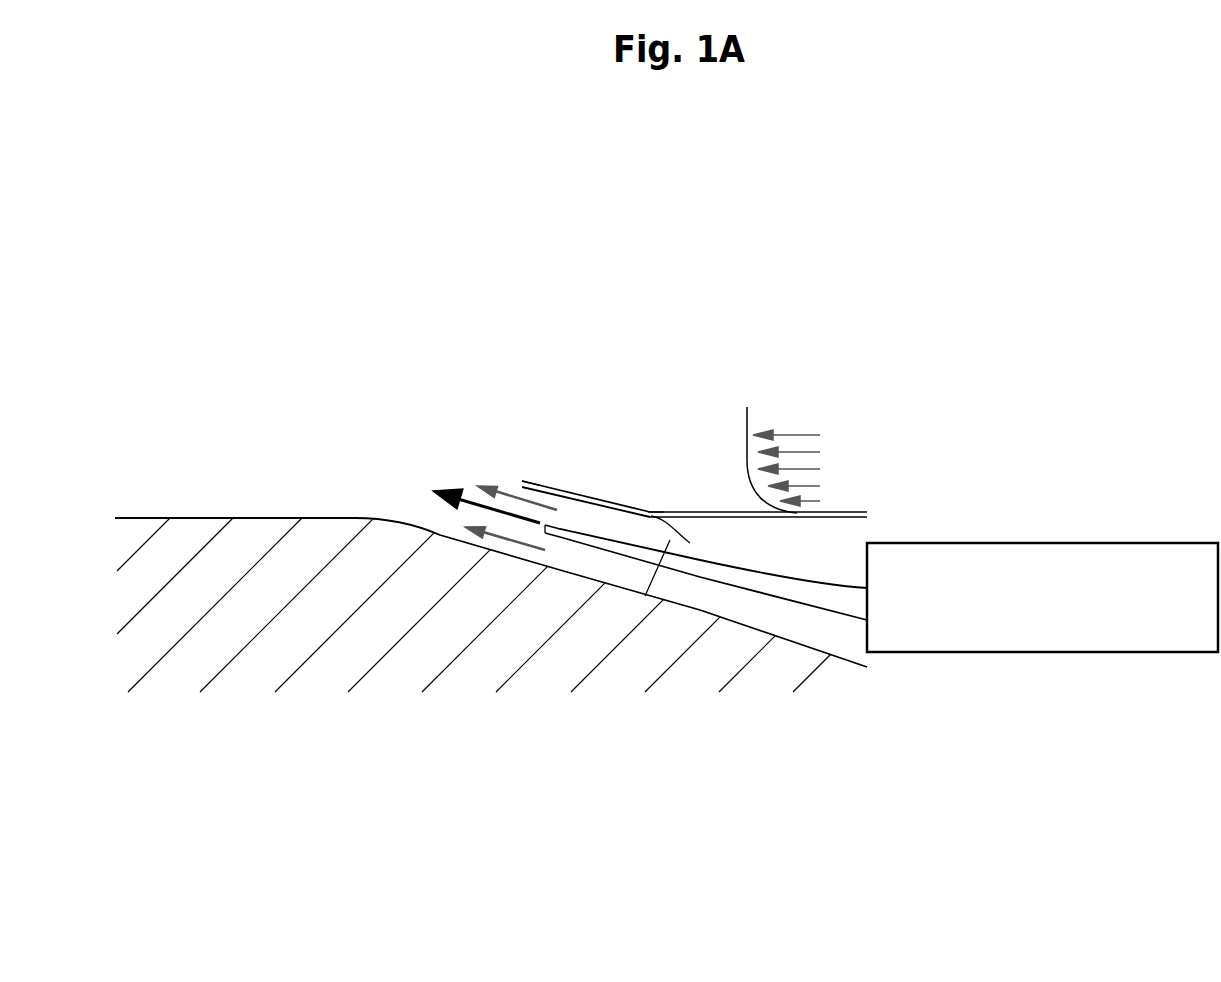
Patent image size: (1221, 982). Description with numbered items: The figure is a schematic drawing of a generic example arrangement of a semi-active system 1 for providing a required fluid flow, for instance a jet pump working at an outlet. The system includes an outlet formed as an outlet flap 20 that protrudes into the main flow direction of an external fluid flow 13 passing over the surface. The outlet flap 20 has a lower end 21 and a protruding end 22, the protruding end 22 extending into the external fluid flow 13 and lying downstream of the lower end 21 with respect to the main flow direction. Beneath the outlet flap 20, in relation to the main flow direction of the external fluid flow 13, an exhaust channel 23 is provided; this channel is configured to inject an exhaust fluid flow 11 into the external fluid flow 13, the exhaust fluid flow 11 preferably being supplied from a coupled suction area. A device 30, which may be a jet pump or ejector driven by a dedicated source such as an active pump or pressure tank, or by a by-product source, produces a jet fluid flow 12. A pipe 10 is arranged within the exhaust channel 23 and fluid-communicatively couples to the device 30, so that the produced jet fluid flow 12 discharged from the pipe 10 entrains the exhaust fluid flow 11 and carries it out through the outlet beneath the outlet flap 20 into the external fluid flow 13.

The semi-active system 1 is at (600, 247).
The pipe 10 is at (582, 532).
The exhaust fluid flow 11 is at (503, 493).
The jet fluid flow 12 is at (463, 499).
The external fluid flow 13 is at (831, 445).
The outlet flap 20 is at (592, 499).
The lower end 21 is at (656, 509).
The protruding end 22 is at (522, 482).
The exhaust channel 23 is at (689, 556).
The device 30 is at (1042, 597).